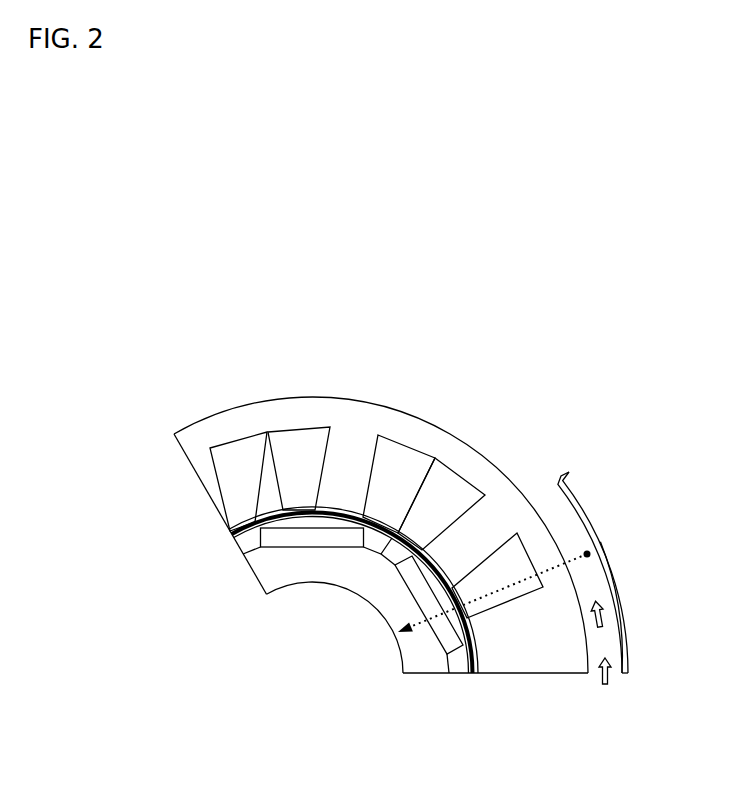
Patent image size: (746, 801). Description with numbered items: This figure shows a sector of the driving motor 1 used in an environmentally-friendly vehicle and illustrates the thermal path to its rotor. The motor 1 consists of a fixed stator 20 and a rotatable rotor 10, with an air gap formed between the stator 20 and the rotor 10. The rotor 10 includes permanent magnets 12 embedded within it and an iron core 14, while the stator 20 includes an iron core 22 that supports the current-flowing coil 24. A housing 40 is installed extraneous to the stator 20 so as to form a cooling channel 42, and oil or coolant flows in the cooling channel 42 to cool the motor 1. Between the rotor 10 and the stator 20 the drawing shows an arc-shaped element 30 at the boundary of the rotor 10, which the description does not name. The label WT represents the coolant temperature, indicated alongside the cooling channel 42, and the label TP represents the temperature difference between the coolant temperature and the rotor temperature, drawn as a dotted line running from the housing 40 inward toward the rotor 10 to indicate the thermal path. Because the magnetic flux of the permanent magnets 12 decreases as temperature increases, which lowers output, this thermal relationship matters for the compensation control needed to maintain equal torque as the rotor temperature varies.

The motor 1 is at (487, 416).
The rotor 10 is at (245, 580).
The permanent magnets 12 is at (327, 535).
The iron core 14 is at (277, 577).
The stator 20 is at (176, 470).
The iron core 22 is at (248, 418).
The coil 24 is at (308, 437).
The sleeve 30 is at (232, 534).
The housing 40 is at (608, 560).
The cooling channel 42 is at (607, 643).
The temperature difference TP is at (545, 570).
The coolant temperature WT is at (604, 612).